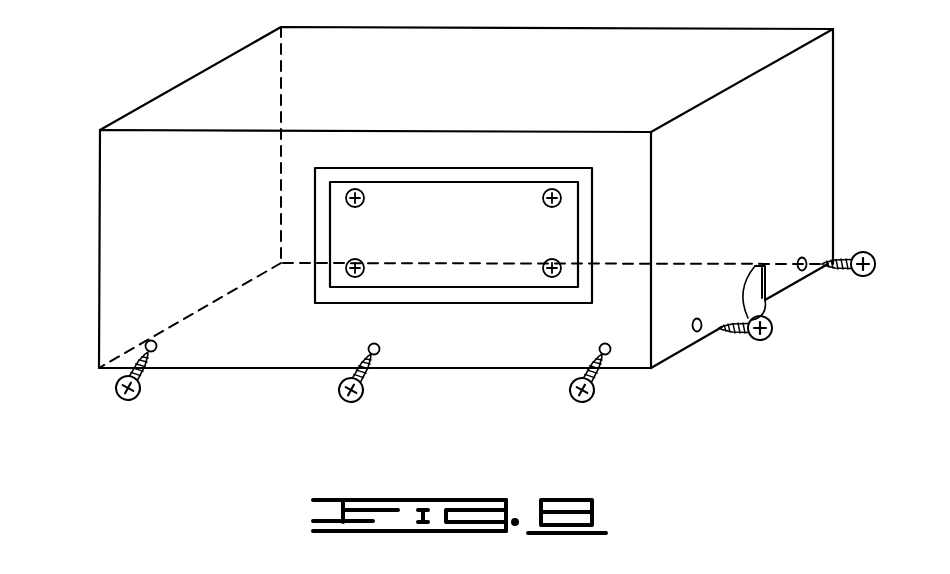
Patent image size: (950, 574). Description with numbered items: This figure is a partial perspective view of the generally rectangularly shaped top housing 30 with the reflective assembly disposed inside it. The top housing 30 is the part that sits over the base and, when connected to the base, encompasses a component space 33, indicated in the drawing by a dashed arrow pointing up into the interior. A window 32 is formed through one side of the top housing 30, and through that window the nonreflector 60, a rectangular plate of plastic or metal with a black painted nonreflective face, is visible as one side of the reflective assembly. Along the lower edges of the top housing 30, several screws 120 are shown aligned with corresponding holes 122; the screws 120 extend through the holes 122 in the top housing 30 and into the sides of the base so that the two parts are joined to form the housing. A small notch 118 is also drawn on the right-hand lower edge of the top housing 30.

The top housing 30 is at (99, 222).
The window 32 is at (413, 303).
The component space 33 is at (297, 320).
The nonreflector 60 is at (351, 238).
The notch 118 is at (767, 302).
The screws 120 is at (128, 400).
The holes 122 is at (156, 352).